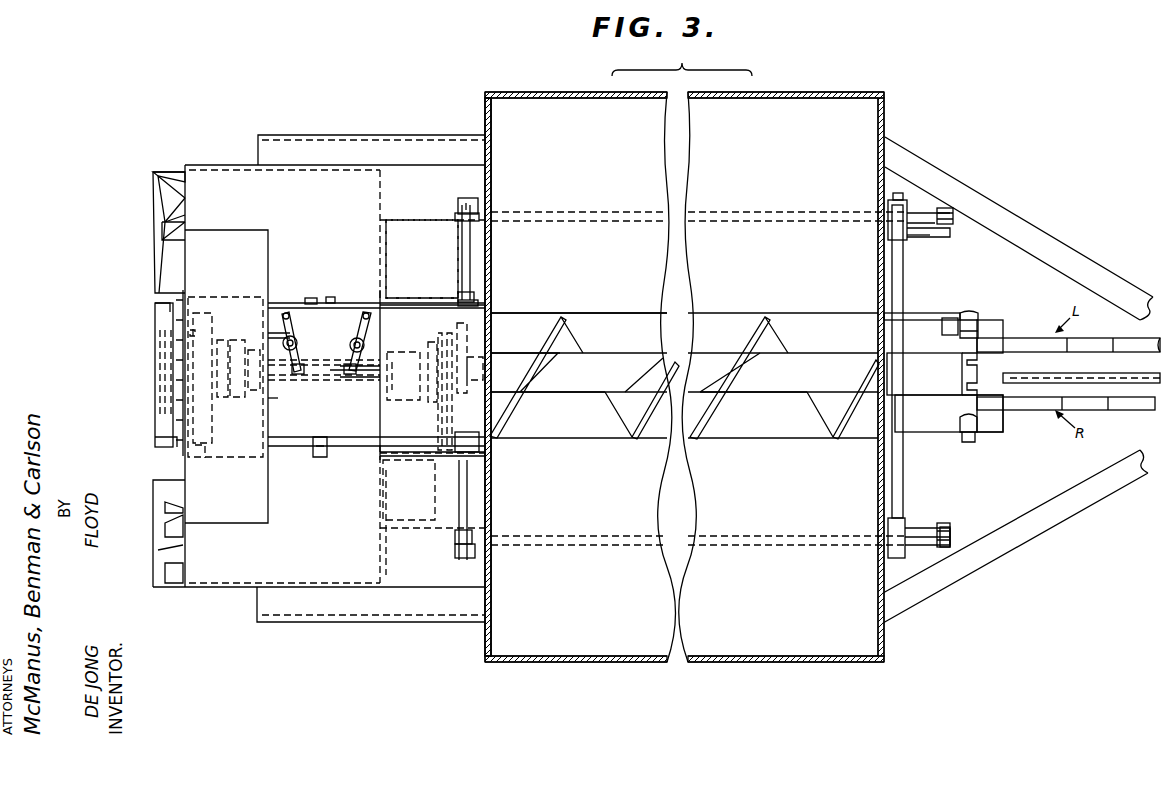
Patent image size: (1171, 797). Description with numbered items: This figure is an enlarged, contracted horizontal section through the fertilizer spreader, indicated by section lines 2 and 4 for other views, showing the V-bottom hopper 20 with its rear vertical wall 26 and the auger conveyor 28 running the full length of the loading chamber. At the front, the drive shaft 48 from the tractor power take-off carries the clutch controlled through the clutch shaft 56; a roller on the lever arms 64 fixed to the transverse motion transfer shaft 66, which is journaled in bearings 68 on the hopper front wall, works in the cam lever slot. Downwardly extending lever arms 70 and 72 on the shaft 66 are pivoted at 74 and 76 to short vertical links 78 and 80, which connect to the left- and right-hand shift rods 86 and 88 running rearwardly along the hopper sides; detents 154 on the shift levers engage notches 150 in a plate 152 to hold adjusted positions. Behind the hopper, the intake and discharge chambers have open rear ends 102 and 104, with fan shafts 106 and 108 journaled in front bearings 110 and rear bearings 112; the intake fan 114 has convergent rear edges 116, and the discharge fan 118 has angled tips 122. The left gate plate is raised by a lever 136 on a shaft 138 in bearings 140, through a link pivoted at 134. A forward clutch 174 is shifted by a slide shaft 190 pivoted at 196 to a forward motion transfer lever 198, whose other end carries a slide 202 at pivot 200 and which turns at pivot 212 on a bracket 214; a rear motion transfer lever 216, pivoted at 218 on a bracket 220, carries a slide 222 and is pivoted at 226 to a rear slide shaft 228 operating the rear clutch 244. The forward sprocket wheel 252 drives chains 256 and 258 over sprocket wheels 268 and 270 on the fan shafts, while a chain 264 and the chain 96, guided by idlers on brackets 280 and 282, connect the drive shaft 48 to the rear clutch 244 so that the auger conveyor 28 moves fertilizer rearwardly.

The section line 2- 2 is at (372, 57).
The section line 4- 4 is at (150, 355).
The V-bottom hopper 20 is at (827, 91).
The rear vertical wall 26 is at (492, 313).
The auger conveyor 28 is at (707, 354).
The drive shaft 48 is at (1116, 374).
The clutch shaft 56 is at (968, 443).
The lever arms 64 is at (942, 316).
The motion transfer shaft 66 is at (905, 292).
The bearings 68 is at (900, 210).
The lever arm 70 is at (926, 240).
The lever arm 72 is at (915, 527).
The pivot 74 is at (950, 237).
The pivot 76 is at (950, 526).
The vertical link 78 is at (985, 212).
The vertical link 80 is at (954, 540).
The left-hand shift rod 86 is at (945, 216).
The right-hand shift rod 88 is at (937, 548).
The chain 96 is at (157, 440).
The open rear end 102 is at (176, 206).
The open rear end 104 is at (165, 552).
The fan shaft 106 is at (432, 220).
The fan shaft 108 is at (430, 535).
The front bearings 110 is at (486, 262).
The rear bearings 112 is at (421, 259).
The fan 114 is at (173, 171).
The rear edges 116 is at (157, 179).
The discharge fan 118 is at (163, 503).
The angled tips 122 is at (165, 522).
The pivot 134 is at (310, 300).
The lever 136 is at (410, 312).
The left-hand shaft 138 is at (462, 270).
The bearings 140 is at (458, 205).
The detent notches 150 is at (966, 382).
The plate 152 is at (932, 398).
The detents 154 is at (982, 350).
The clutch 174 is at (417, 404).
The slide shaft 190 is at (369, 374).
The pivot 196 is at (350, 378).
The forward motion transfer lever 198 is at (345, 370).
The pivot 200 is at (367, 312).
The slide 202 is at (356, 312).
The pivot 212 is at (352, 348).
The bracket 214 is at (353, 340).
The rear motion transfer lever 216 is at (296, 348).
The pivot 218 is at (287, 314).
The bracket 220 is at (277, 338).
The slide 222 is at (286, 314).
The pivot 226 is at (300, 376).
The rear slide shaft 228 is at (232, 398).
The clutch 244 is at (241, 404).
The forward sprocket wheel 252 is at (525, 340).
The chain 256 is at (492, 355).
The chain 258 is at (446, 412).
The chain 264 is at (155, 397).
The sprocket wheel 268 is at (489, 198).
The sprocket wheel 270 is at (462, 555).
The bracket 280 is at (196, 313).
The bracket 282 is at (210, 460).